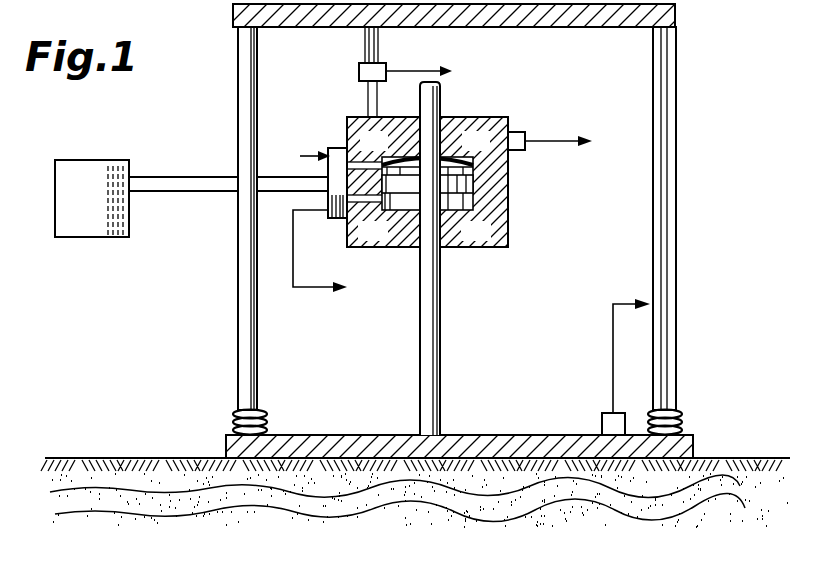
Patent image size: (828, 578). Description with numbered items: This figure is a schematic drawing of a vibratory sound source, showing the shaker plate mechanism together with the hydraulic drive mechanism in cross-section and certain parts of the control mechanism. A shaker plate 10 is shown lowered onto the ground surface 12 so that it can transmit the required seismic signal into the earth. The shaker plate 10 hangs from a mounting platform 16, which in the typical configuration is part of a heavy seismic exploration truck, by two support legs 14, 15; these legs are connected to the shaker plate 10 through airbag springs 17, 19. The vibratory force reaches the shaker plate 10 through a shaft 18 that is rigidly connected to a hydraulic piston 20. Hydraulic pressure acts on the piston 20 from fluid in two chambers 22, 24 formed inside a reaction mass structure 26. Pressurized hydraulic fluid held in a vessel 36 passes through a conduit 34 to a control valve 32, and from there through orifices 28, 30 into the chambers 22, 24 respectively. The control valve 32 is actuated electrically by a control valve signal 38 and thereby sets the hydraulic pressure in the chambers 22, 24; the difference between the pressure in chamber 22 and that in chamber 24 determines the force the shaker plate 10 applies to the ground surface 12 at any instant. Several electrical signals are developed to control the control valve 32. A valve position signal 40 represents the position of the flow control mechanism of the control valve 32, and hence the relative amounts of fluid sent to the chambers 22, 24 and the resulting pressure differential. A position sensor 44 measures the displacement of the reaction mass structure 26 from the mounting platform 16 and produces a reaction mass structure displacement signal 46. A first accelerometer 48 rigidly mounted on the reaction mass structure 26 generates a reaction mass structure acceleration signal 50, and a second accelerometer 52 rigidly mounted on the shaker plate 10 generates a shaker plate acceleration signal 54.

The shaker plate 10 is at (482, 434).
The ground surface 12 is at (70, 459).
The support leg 14 is at (677, 358).
The support leg 15 is at (238, 355).
The mounting platform 16 is at (676, 11).
The airbag spring 17 is at (680, 419).
The shaft 18 is at (443, 370).
The airbag spring 19 is at (236, 422).
The hydraulic piston 20 is at (473, 185).
The chamber 22 is at (454, 157).
The chamber 24 is at (466, 202).
The reaction mass structure 26 is at (510, 228).
The orifice 28 is at (378, 161).
The orifice 30 is at (352, 213).
The control valve 32 is at (343, 147).
The conduit 34 is at (190, 177).
The vessel 36 is at (105, 160).
The control valve signal 38 is at (301, 148).
The valve position signal 40 is at (293, 273).
The position sensor 44 is at (368, 83).
The reaction mass structure displacement signal 46 is at (419, 60).
The first accelerometer 48 is at (514, 131).
The reaction mass structure acceleration signal 50 is at (571, 146).
The second accelerometer 52 is at (602, 418).
The shaker plate acceleration signal 54 is at (614, 302).